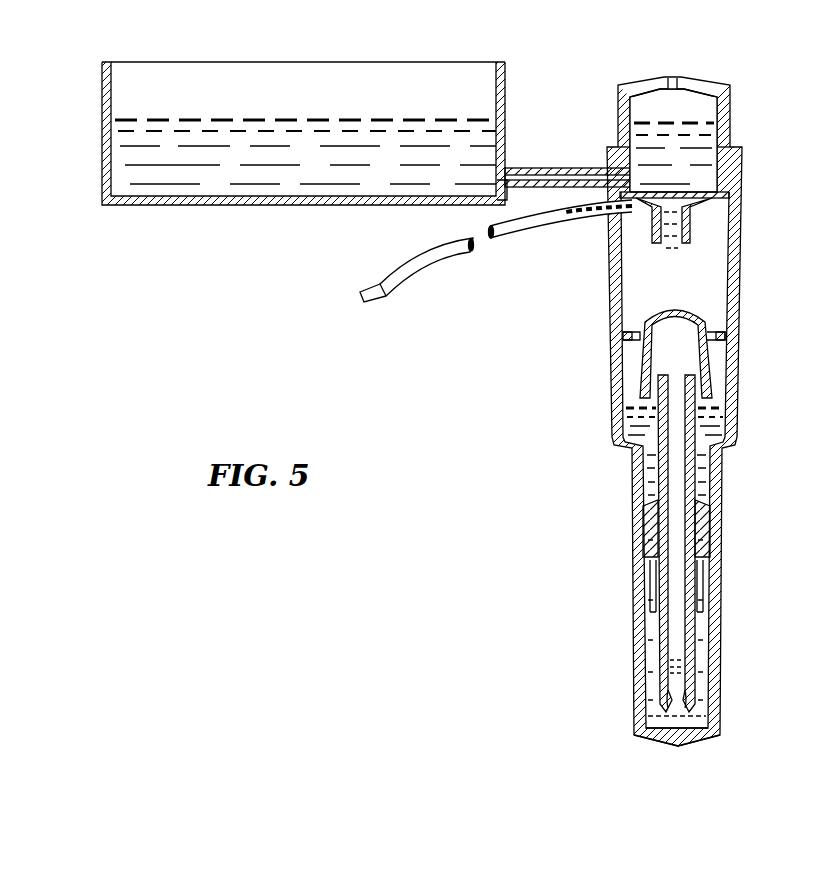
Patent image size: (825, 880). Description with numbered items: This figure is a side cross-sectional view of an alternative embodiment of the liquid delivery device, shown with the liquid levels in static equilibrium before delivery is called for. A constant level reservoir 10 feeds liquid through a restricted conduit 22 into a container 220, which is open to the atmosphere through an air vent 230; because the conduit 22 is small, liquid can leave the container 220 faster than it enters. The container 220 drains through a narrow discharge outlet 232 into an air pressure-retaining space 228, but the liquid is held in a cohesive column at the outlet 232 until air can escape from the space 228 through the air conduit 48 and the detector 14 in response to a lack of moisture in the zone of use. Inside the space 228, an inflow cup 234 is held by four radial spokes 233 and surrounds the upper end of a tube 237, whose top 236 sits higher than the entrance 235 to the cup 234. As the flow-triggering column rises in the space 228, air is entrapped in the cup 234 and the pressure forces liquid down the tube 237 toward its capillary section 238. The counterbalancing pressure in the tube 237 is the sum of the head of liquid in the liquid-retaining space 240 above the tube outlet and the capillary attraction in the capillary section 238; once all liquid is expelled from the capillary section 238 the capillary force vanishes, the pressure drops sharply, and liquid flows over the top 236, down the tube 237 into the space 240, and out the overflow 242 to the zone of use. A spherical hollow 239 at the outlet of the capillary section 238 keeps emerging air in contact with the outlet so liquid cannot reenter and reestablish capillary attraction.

The constant level reservoir 10 is at (507, 67).
The conduit 22 is at (576, 167).
The detector 14 is at (374, 296).
The air conduit 48 is at (527, 228).
The container 220 is at (703, 112).
The air pressure-retaining space 228 is at (628, 314).
The air vent 230 is at (672, 76).
The discharge outlet 232 is at (692, 232).
The radial spokes 233 is at (707, 332).
The inflow cup 234 is at (714, 366).
The entrance 235 is at (698, 404).
The top 236 is at (672, 374).
The tube 237 is at (657, 484).
The capillary section 238 is at (673, 688).
The spherical hollow 239 is at (678, 713).
The liquid-retaining space 240 is at (702, 630).
The overflow 242 is at (698, 588).